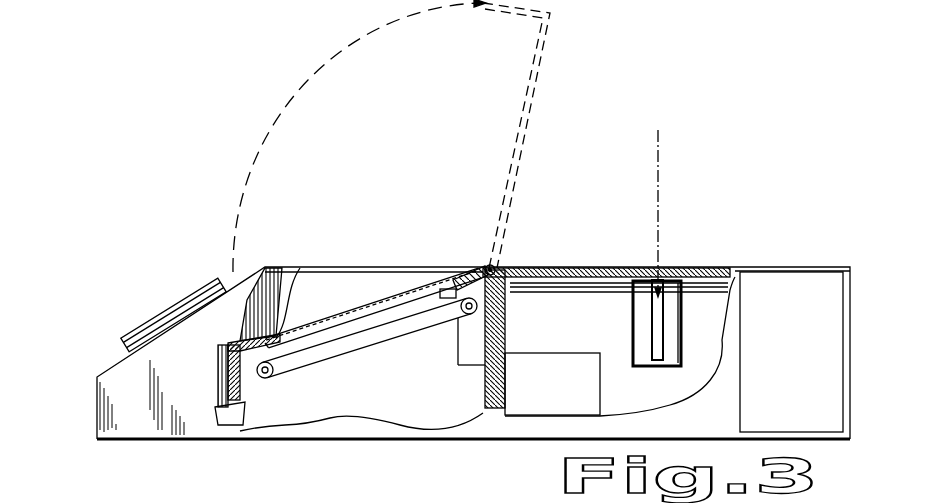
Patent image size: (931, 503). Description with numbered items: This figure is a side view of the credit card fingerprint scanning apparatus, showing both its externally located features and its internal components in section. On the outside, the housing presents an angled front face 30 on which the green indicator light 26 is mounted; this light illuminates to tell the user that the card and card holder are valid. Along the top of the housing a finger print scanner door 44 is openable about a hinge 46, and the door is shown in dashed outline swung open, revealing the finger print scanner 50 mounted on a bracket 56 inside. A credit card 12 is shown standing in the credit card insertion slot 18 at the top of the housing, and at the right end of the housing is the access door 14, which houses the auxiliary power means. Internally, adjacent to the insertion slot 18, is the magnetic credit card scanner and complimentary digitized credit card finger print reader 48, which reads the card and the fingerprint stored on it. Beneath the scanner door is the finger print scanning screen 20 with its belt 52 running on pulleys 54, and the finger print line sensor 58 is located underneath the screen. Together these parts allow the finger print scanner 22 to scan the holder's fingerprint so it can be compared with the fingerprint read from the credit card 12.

The credit card 12 is at (682, 192).
The access door 14 is at (805, 288).
The credit card insertion slot 18 is at (657, 308).
The fingerprint scanning screen 20 is at (374, 301).
The finger print scanner 22 is at (266, 268).
The green indicator light 26 is at (137, 320).
The angled front face 30 is at (110, 360).
The finger print scanner door 44 is at (517, 190).
The hinge 46 is at (498, 268).
The magnetic credit card scanner and complimentary digitized credit card finger prin 48 is at (673, 325).
The finger print scanner 50 is at (382, 354).
The belt 52 is at (407, 337).
The pulleys 54 is at (280, 372).
The bracket 56 is at (463, 417).
The finger print line sensor 58 is at (442, 278).